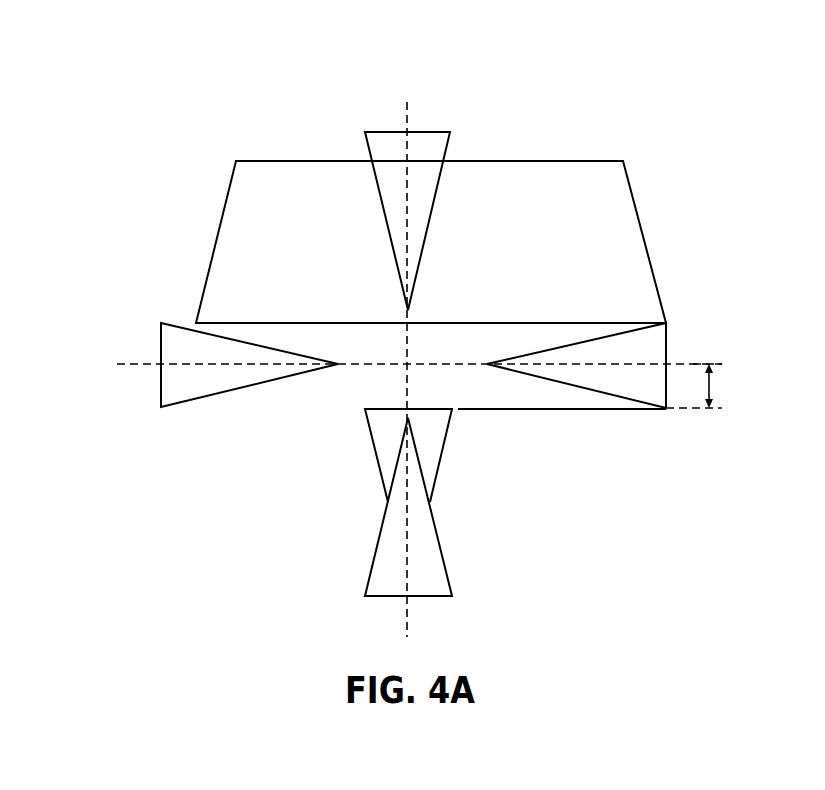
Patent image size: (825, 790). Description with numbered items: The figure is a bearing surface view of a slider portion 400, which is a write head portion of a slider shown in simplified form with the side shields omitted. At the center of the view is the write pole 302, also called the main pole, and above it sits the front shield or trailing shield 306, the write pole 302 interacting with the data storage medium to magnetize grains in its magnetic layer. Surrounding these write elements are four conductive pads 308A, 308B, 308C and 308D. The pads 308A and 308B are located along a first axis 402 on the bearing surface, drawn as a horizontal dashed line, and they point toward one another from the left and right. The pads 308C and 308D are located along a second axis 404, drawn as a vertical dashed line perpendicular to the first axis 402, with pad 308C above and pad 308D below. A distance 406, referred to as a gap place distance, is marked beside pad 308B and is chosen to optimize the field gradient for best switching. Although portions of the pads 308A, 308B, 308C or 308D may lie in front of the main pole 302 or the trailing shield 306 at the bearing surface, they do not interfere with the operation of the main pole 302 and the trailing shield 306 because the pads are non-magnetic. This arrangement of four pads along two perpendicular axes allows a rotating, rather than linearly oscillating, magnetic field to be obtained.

The slider portion 400 is at (588, 76).
The first axis 402 is at (142, 366).
The second axis 404 is at (409, 120).
The gap place distance 406 is at (716, 383).
The write pole 302 is at (383, 430).
The trailing shield 306 is at (618, 239).
The conductive pad 308A is at (188, 388).
The conductive pad 308B is at (642, 390).
The conductive pad 308C is at (436, 143).
The conductive pad 308D is at (436, 578).